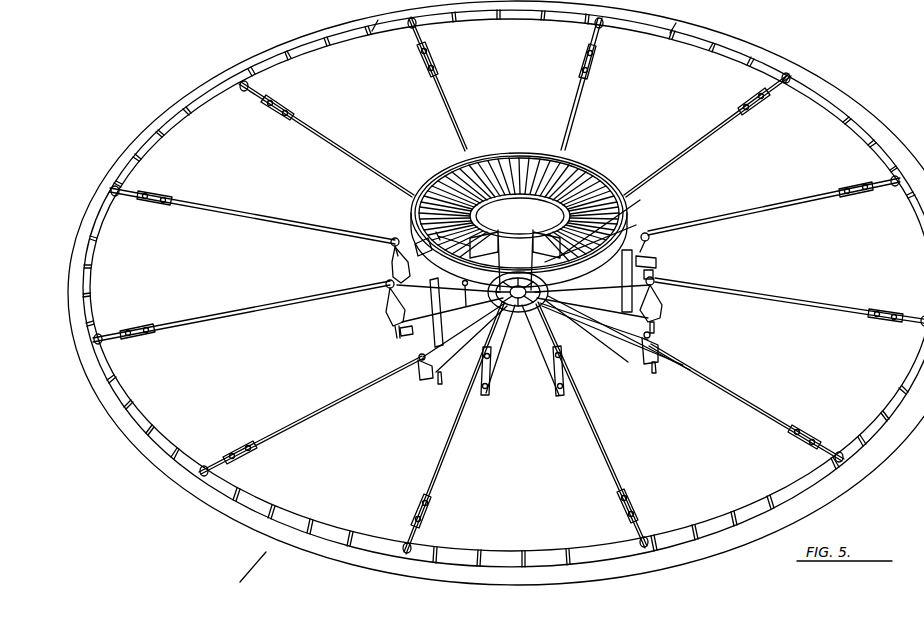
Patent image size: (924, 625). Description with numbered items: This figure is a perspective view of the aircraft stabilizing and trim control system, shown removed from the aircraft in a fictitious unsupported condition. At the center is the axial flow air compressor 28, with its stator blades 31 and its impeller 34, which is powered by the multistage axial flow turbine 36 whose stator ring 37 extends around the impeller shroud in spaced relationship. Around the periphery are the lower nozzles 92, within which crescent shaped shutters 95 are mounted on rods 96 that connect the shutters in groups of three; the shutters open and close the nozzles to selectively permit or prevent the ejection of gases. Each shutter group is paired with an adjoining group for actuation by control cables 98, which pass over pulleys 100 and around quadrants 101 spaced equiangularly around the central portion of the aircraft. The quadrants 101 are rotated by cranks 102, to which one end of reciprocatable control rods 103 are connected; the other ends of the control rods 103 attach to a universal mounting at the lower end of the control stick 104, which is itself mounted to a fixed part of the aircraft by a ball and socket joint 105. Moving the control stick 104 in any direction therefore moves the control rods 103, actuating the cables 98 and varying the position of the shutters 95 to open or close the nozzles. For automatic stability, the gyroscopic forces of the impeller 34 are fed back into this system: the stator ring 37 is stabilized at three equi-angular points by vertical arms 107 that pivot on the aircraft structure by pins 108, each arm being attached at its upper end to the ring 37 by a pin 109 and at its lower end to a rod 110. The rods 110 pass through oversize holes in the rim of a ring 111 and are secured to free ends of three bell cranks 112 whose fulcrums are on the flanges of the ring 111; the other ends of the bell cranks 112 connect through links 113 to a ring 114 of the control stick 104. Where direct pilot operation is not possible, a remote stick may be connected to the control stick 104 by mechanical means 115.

The axial flow air compressor 28 is at (518, 152).
The stator blades 31 is at (602, 232).
The impeller 34 is at (590, 182).
The multistage axial flow turbine 36 is at (440, 178).
The stator ring 37 is at (575, 246).
The lower nozzles 92 is at (652, 312).
The crescent shaped shutters 95 is at (166, 147).
The rods 96 is at (376, 30).
The control cables 98 is at (210, 313).
The pulleys 100 is at (386, 284).
The quadrants 101 is at (380, 300).
The cranks 102 is at (395, 318).
The control rods 103 is at (656, 320).
The control stick 104 is at (526, 272).
The ball and socket joint 105 is at (438, 238).
The vertical arms 107 is at (653, 273).
The pins 108 is at (656, 264).
The pin 109 is at (438, 294).
The rods 110 is at (582, 328).
The ring 111 is at (543, 304).
The bell cranks 112 is at (567, 310).
The links 113 is at (527, 300).
The ring of the control stick 114 is at (521, 298).
The mechanical means 115 is at (418, 247).